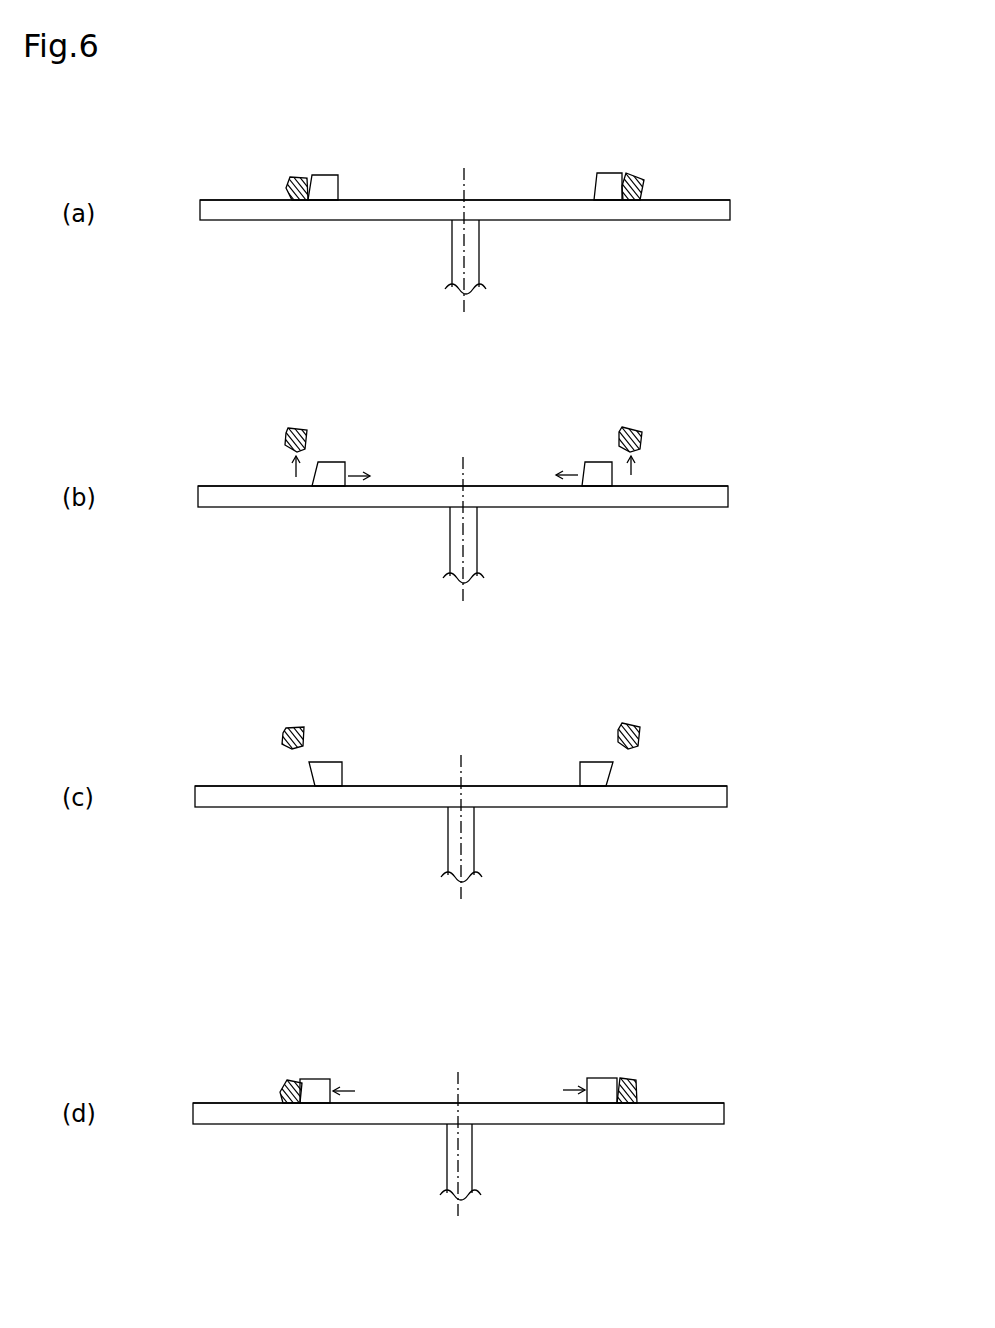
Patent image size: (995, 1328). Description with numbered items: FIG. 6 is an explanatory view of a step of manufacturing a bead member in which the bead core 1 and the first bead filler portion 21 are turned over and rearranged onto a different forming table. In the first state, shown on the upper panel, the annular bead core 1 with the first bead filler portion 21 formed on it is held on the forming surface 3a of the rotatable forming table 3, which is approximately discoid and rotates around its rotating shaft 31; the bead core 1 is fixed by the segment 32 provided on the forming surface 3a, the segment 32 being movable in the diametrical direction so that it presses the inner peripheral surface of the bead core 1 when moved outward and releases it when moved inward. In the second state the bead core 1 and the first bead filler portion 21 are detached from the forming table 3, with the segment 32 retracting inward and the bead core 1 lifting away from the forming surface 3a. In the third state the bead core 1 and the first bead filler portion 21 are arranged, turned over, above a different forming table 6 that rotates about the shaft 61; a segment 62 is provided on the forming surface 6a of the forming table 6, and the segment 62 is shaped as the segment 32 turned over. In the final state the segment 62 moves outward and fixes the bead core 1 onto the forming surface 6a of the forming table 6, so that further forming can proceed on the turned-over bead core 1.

The bead core 1 is at (628, 175).
The forming table 3 is at (767, 213).
The forming surface 3a is at (530, 200).
The forming table 6 is at (762, 800).
The forming surface 6a is at (527, 786).
The first bead filler portion 21 is at (645, 176).
The rotating shaft 31 is at (479, 254).
The segment 32 is at (593, 172).
The rotary shaft 61 is at (474, 841).
The segment 62 is at (602, 762).